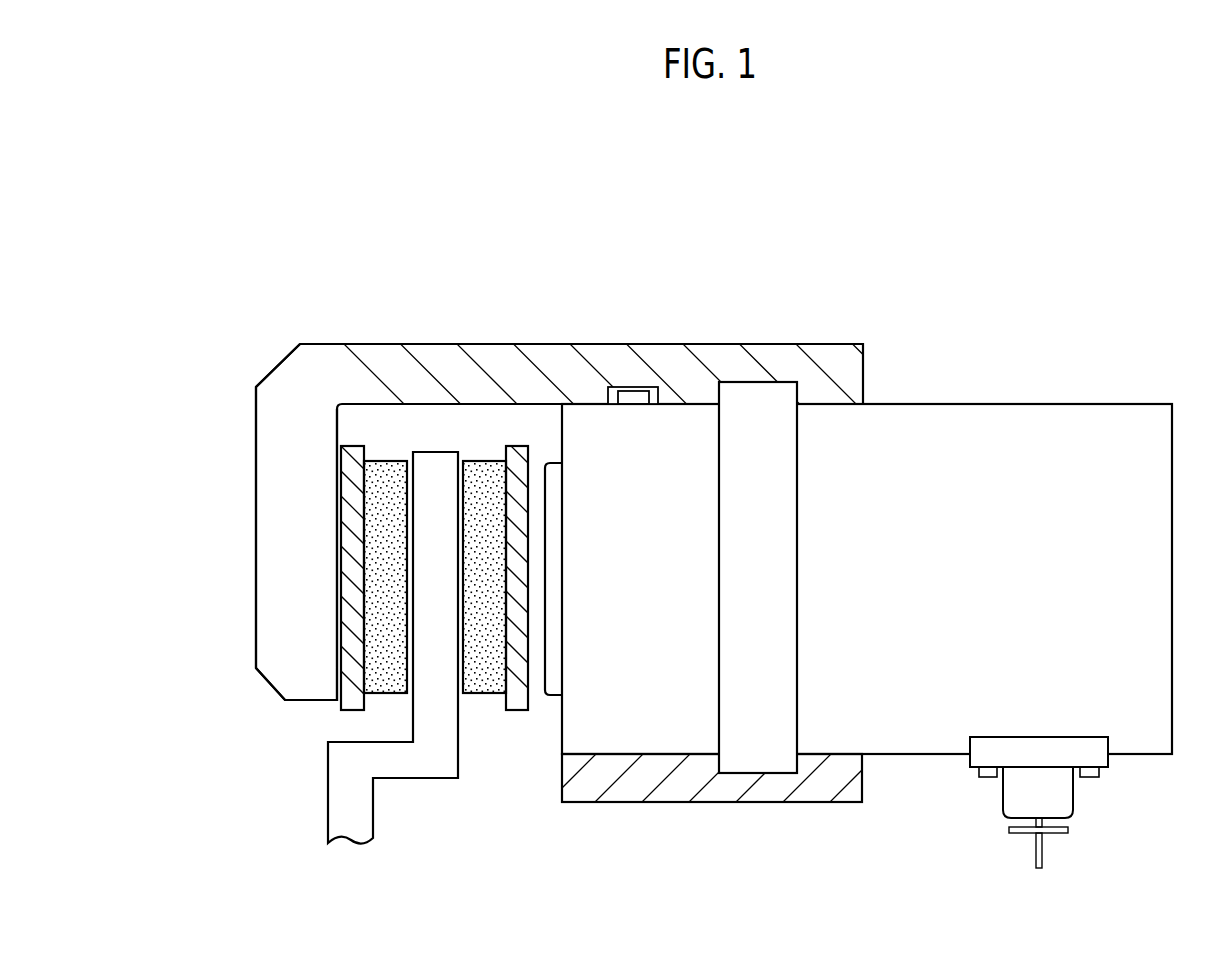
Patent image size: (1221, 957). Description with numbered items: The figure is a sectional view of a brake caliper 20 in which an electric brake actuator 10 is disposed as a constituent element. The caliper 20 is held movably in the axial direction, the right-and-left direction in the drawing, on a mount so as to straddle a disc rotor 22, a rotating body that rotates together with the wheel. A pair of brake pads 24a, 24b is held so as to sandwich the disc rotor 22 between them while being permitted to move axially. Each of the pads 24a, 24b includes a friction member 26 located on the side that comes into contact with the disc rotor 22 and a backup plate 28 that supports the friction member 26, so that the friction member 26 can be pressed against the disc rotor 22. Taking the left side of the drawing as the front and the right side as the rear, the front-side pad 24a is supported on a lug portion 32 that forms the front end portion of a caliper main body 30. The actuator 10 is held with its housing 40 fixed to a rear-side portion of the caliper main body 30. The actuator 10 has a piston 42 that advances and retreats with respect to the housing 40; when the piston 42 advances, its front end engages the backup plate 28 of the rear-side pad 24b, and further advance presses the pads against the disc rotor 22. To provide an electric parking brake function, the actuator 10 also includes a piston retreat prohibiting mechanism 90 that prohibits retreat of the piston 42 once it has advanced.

The electric brake actuator 10 is at (930, 377).
The brake caliper 20 is at (610, 422).
The disc rotor 22 is at (338, 778).
The brake pad (front side) 24a is at (372, 426).
The brake pad (rear side) 24b is at (492, 426).
The friction member 26 is at (390, 465).
The backup plate 28 is at (350, 450).
The caliper main body 30 is at (600, 350).
The lug portion 32 is at (273, 607).
The housing 40 is at (653, 747).
The piston 42 is at (551, 686).
The piston retreat prohibiting mechanism 90 is at (983, 797).